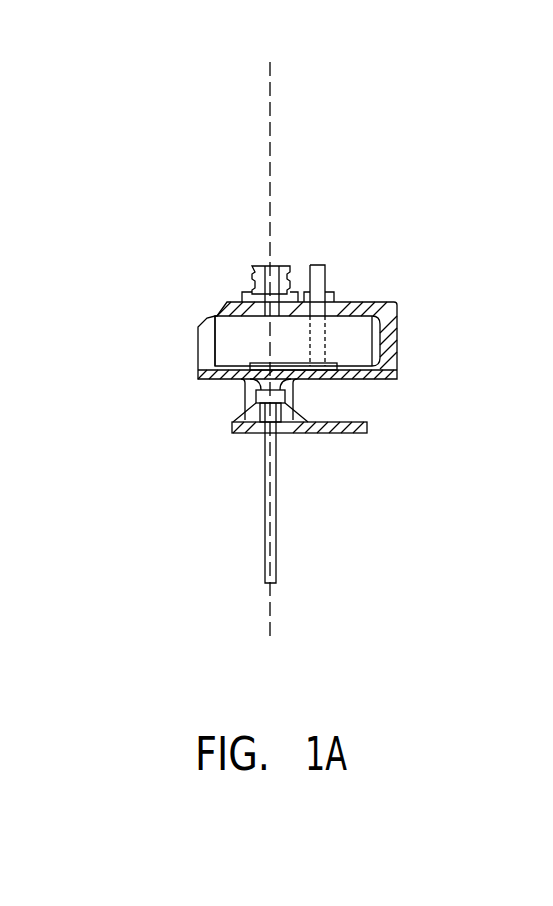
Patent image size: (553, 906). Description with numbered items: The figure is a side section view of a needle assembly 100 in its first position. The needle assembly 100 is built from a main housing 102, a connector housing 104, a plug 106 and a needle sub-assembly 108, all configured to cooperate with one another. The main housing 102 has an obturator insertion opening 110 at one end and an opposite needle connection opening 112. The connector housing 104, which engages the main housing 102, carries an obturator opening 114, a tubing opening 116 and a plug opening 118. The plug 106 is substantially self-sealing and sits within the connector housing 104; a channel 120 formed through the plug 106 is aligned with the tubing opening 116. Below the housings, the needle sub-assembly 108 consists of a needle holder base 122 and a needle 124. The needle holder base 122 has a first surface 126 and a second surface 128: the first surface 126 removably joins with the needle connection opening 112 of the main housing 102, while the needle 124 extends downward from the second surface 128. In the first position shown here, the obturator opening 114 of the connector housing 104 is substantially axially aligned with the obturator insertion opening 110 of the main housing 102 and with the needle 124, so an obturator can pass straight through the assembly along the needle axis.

The needle assembly 100 is at (352, 113).
The main housing 102 is at (245, 388).
The connector housing 104 is at (397, 327).
The plug 106 is at (240, 338).
The needle sub-assembly 108 is at (125, 562).
The obturator insertion opening 110 is at (268, 294).
The needle connection opening 112 is at (247, 410).
The obturator opening 114 is at (265, 266).
The tubing opening 116 is at (320, 263).
The plug opening 118 is at (338, 368).
The channel 120 is at (327, 338).
The needle holder base 122 is at (253, 434).
The needle 124 is at (276, 548).
The first surface 126 is at (293, 422).
The second surface 128 is at (330, 433).